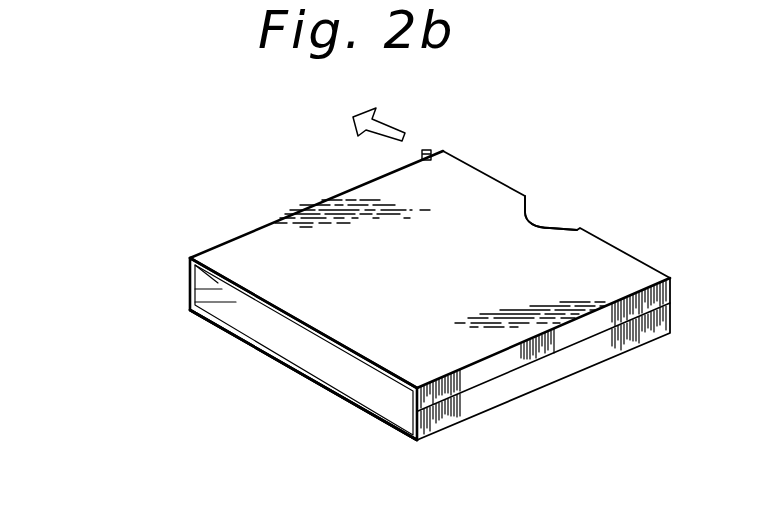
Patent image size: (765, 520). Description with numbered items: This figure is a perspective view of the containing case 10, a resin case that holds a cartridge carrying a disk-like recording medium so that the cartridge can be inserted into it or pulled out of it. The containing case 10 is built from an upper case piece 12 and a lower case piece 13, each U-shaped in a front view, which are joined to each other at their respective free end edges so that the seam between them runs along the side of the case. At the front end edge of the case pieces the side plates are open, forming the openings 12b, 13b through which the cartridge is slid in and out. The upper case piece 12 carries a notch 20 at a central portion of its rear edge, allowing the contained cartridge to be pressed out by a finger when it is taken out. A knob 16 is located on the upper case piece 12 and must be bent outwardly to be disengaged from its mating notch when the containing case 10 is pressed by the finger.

The containing case 10 is at (167, 295).
The upper case piece 12 is at (325, 208).
The lower case piece 13 is at (543, 366).
The knob 16 is at (427, 147).
The notch 20 is at (540, 221).
The opening 12b is at (250, 330).
The opening 13b is at (303, 375).